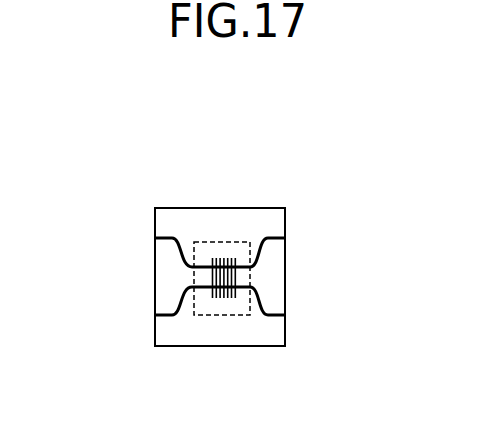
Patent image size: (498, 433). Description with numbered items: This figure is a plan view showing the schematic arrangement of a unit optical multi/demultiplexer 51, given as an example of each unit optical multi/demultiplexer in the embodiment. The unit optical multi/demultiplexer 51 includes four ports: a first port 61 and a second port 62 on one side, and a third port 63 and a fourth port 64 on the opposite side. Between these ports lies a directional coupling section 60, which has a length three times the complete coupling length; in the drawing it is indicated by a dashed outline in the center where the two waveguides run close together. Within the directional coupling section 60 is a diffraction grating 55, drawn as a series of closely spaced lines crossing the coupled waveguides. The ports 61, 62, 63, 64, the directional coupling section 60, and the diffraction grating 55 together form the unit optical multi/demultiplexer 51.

The unit optical multi/demultiplexer 51 is at (284, 191).
The diffraction grating 55 is at (220, 300).
The directional coupling section 60 is at (215, 242).
The first port 61 is at (153, 239).
The second port 62 is at (153, 315).
The third port 63 is at (290, 238).
The fourth port 64 is at (290, 313).